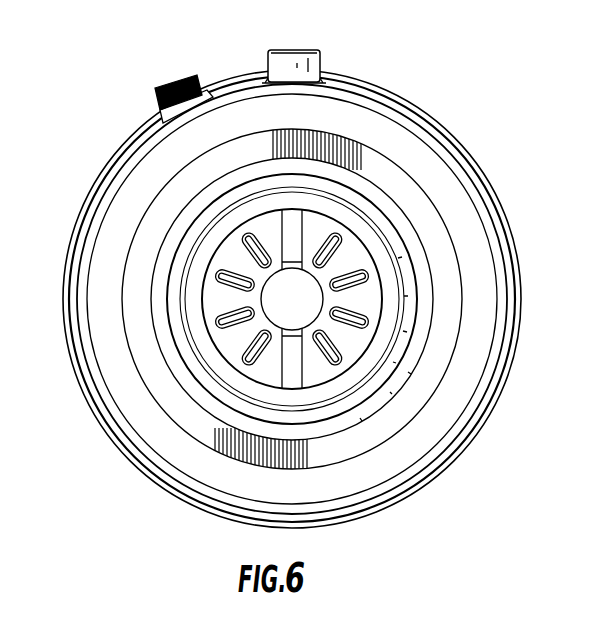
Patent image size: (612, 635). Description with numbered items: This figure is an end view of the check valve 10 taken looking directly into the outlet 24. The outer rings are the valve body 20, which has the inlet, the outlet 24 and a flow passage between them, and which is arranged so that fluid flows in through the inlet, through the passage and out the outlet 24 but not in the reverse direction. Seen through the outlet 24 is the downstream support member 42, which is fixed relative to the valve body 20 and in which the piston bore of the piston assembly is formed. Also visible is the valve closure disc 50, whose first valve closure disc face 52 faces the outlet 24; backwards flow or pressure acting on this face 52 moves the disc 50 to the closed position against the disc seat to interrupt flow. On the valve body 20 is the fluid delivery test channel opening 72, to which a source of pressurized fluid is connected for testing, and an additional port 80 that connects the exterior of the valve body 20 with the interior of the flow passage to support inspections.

The check valve 10 is at (520, 166).
The valve body 20 is at (513, 297).
The outlet 24 is at (330, 373).
The downstream support member 42 is at (293, 230).
The valve closure disc 50 is at (327, 240).
The first valve closure disc face 52 is at (278, 380).
The fluid delivery test channel opening 72 is at (302, 60).
The port 80 is at (190, 77).